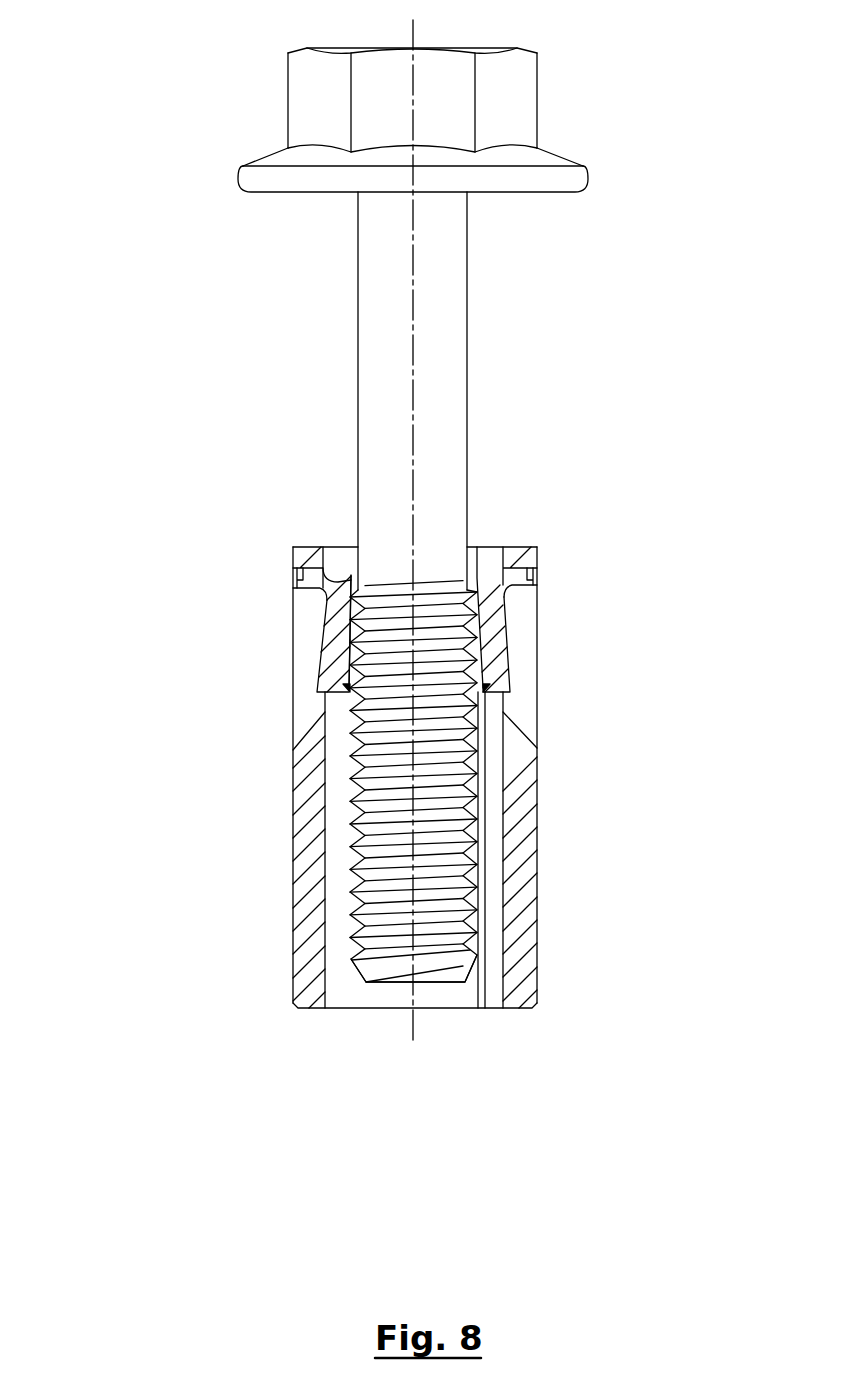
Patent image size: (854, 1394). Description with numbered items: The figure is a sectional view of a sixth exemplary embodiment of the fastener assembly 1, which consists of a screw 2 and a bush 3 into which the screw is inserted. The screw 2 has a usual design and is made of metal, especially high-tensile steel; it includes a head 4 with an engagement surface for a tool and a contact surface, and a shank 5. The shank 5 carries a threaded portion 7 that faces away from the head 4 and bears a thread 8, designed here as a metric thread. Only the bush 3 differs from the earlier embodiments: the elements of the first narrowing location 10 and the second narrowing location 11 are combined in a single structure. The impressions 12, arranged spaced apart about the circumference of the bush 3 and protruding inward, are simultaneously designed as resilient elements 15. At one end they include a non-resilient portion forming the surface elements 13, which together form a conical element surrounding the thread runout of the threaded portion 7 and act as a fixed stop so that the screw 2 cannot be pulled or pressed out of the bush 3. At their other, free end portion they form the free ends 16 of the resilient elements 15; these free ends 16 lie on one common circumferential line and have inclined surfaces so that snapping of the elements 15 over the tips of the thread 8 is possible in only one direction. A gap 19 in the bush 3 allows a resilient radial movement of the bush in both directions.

The fastener assembly 1 is at (579, 339).
The screw 2 is at (556, 391).
The shank 5 is at (470, 446).
The head 4 is at (542, 104).
The threaded portion 7 is at (554, 781).
The thread 8 is at (443, 860).
The bush 3 is at (540, 927).
The gap 19 is at (483, 958).
The impressions 12 is at (555, 628).
The resilient elements 15 is at (487, 625).
The surface elements 13 is at (477, 585).
The free ends 16 is at (503, 667).
The first narrowing location 10 is at (347, 613).
The second narrowing location 11 is at (347, 675).